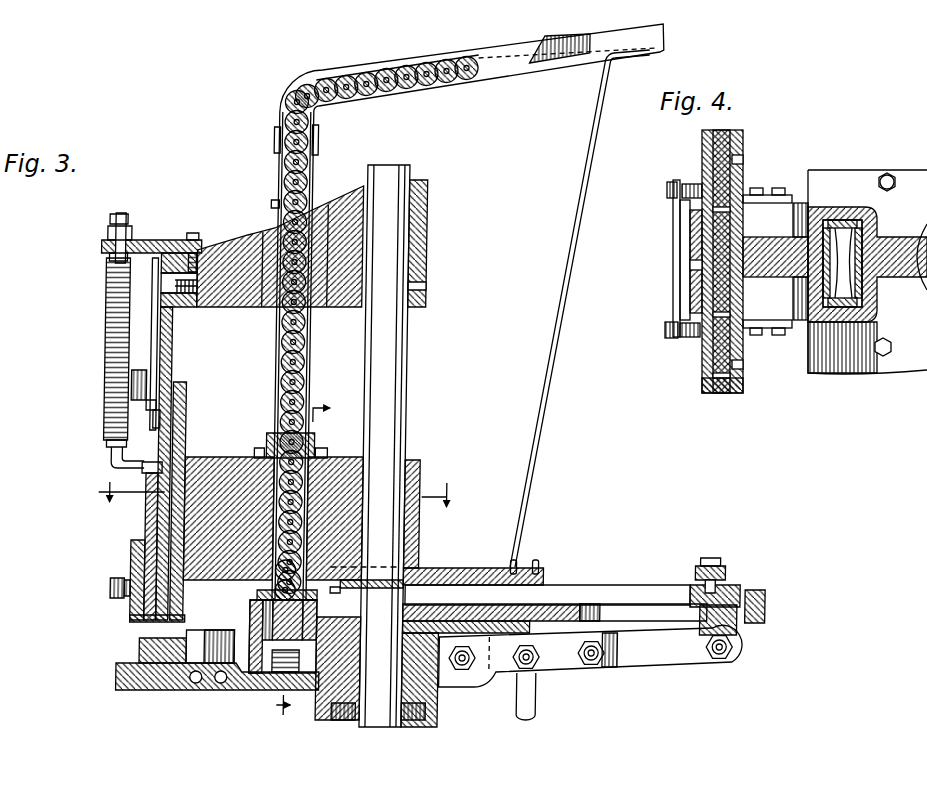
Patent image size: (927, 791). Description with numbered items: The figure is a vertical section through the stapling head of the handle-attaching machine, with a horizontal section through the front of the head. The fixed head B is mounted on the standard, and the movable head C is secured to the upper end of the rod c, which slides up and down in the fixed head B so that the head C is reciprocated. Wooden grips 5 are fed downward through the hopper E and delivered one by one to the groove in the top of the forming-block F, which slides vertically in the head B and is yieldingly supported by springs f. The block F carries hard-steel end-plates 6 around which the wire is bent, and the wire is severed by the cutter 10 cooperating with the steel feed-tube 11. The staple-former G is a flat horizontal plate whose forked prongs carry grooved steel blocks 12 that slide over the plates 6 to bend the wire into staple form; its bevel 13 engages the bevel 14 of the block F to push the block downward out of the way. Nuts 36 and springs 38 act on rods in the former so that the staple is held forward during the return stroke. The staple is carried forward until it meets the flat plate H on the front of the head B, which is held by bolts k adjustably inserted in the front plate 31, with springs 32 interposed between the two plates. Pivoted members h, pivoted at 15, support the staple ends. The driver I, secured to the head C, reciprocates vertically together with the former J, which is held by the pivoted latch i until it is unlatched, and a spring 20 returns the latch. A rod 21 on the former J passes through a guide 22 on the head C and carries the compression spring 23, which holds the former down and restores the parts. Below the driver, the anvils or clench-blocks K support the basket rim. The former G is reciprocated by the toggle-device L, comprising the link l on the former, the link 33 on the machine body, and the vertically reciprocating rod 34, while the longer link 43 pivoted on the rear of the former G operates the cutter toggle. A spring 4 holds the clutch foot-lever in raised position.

In FIG. 3, the hopper E is at (278, 342).
In FIG. 3, the wooden grip 5 is at (419, 87).
In FIG. 4, the wooden grip 5 is at (845, 298).
In FIG. 3, the grooved steel block 12 is at (407, 547).
In FIG. 3, the movable head C is at (345, 252).
In FIG. 3, the rod c is at (392, 413).
In FIG. 3, the guide 22 is at (147, 240).
In FIG. 3, the compression spring 23 is at (101, 313).
In FIG. 3, the rod 21 is at (107, 450).
In FIG. 3, the spring 20 is at (150, 322).
In FIG. 3, the pivoted latch i is at (150, 418).
In FIG. 3, the driver I is at (170, 333).
In FIG. 4, the driver I is at (718, 237).
In FIG. 3, the former J is at (144, 517).
In FIG. 4, the former J is at (700, 277).
In FIG. 3, the flat plate H is at (123, 603).
In FIG. 4, the flat plate H is at (683, 297).
In FIG. 3, the front plate 31 is at (133, 619).
In FIG. 4, the front plate 31 is at (702, 386).
In FIG. 3, the bolt k is at (108, 593).
In FIG. 4, the bolt k is at (667, 193).
In FIG. 3, the spring 32 is at (130, 573).
In FIG. 4, the spring 32 is at (695, 183).
In FIG. 3, the fixed head B is at (326, 490).
In FIG. 4, the fixed head B is at (890, 260).
In FIG. 3, the cutter 10 is at (301, 559).
In FIG. 3, the spring 4 is at (268, 495).
In FIG. 3, the forming-block F is at (262, 618).
In FIG. 3, the spring f is at (270, 670).
In FIG. 3, the end-plate 6 is at (253, 588).
In FIG. 3, the bevel 13 is at (343, 612).
In FIG. 3, the anvil or clench-block K is at (140, 648).
In FIG. 3, the steel feed-tube 11 is at (438, 708).
In FIG. 3, the nut 36 is at (420, 570).
In FIG. 3, the spring 38 is at (447, 570).
In FIG. 3, the bevel 14 is at (347, 557).
In FIG. 3, the staple-former G is at (573, 586).
In FIG. 3, the link 43 is at (723, 570).
In FIG. 3, the toggle-device L is at (598, 672).
In FIG. 3, the link l is at (680, 655).
In FIG. 3, the link 33 is at (560, 666).
In FIG. 3, the rod 34 is at (537, 708).
In FIG. 4, the pivot 15 is at (743, 159).
In FIG. 4, the pivoted member h is at (743, 150).